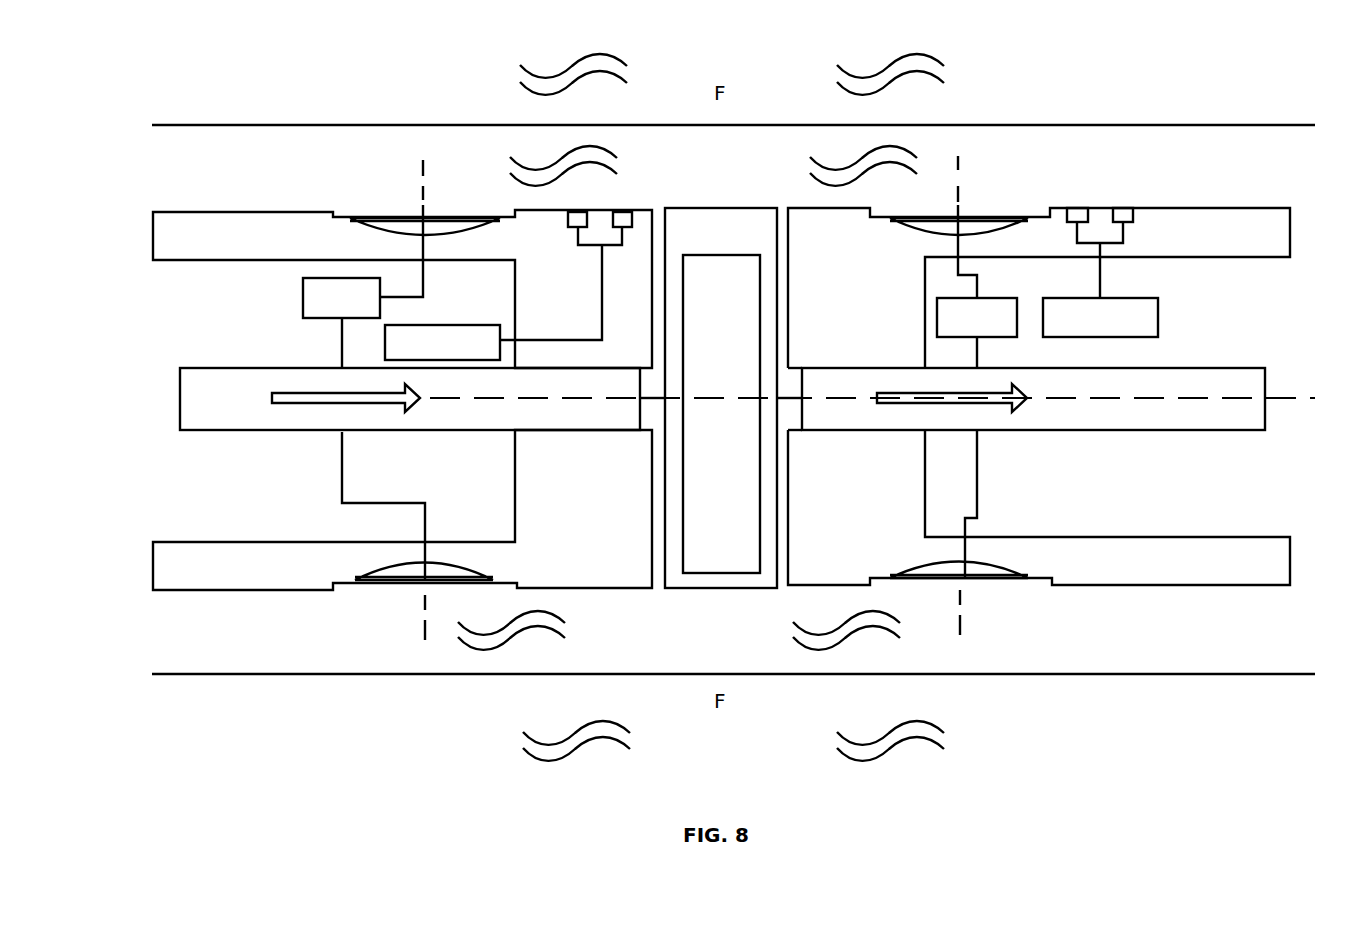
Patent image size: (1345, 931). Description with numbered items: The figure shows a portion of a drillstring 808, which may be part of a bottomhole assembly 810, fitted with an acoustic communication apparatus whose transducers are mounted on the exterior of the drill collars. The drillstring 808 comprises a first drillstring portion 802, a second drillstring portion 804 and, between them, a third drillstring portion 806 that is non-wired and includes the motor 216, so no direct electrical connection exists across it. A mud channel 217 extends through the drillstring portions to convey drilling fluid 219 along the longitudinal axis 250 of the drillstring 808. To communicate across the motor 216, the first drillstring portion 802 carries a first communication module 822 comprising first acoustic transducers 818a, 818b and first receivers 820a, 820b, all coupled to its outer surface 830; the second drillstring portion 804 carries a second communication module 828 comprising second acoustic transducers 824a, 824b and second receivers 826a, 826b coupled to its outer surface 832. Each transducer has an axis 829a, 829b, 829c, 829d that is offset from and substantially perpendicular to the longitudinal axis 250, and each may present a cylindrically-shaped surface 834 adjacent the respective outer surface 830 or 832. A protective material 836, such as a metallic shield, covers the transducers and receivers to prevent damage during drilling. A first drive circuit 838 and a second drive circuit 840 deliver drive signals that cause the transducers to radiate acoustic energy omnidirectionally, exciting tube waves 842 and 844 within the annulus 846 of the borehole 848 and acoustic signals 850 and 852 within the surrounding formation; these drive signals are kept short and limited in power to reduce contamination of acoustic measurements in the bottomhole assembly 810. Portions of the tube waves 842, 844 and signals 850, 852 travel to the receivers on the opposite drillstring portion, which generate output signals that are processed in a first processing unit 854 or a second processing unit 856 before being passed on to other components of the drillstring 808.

The motor 216 is at (728, 572).
The mud channel 217 is at (180, 410).
The drilling fluid 219 is at (213, 375).
The longitudinal axis 250 is at (1250, 402).
The first drillstring portion 802 is at (285, 591).
The second drillstring portion 804 is at (840, 587).
The third drillstring portion 806 is at (720, 588).
The drillstring 808 is at (342, 85).
The bottomhole assembly 810 is at (466, 77).
The first acoustic transducer 818a is at (400, 225).
The first acoustic transducer 818b is at (390, 572).
The first receiver 820a is at (572, 228).
The first receiver 820b is at (632, 226).
The first communication module 822 is at (368, 168).
The second acoustic transducer 824a is at (920, 232).
The second acoustic transducer 824b is at (895, 580).
The second receiver 826a is at (1075, 222).
The second receiver 826b is at (1128, 224).
The second communication module 828 is at (1090, 173).
The axis 829a is at (425, 205).
The axis 829b is at (425, 622).
The axis 829c is at (958, 165).
The axis 829d is at (960, 620).
The outer surface 830 is at (245, 210).
The outer surface 832 is at (1245, 208).
The cylindrically-shaped surface 834 is at (410, 216).
The protective material 836 is at (365, 215).
The first drive circuit 838 is at (303, 292).
The second drive circuit 840 is at (937, 322).
The tube wave 842 is at (512, 158).
The tube wave 844 is at (917, 156).
The annulus 846 is at (748, 173).
The borehole 848 is at (672, 675).
The acoustic signal 850 is at (577, 62).
The acoustic signal 852 is at (905, 60).
The first processing unit 854 is at (490, 325).
The second processing unit 856 is at (1158, 320).